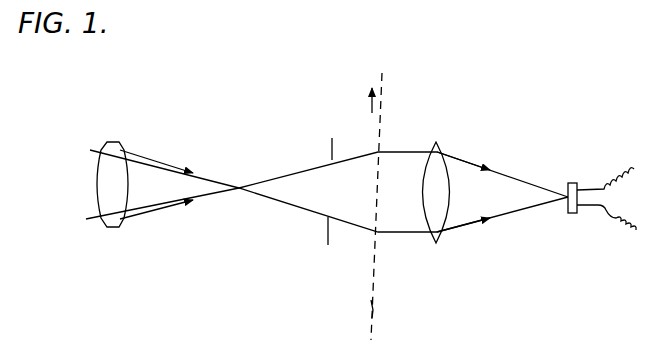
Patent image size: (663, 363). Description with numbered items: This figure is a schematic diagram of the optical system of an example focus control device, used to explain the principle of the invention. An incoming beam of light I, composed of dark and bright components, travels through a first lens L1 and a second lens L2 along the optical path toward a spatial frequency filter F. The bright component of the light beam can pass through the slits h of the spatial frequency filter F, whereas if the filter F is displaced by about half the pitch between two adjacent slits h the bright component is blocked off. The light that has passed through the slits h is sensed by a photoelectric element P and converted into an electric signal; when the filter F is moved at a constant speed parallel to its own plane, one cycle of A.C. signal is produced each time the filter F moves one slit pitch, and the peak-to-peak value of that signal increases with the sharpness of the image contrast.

The incident light I is at (71, 178).
The first lens L1 is at (109, 230).
The second lens L2 is at (437, 147).
The photoelectric element P is at (568, 205).
The slits h is at (373, 310).
The spatial frequency filter F is at (372, 318).